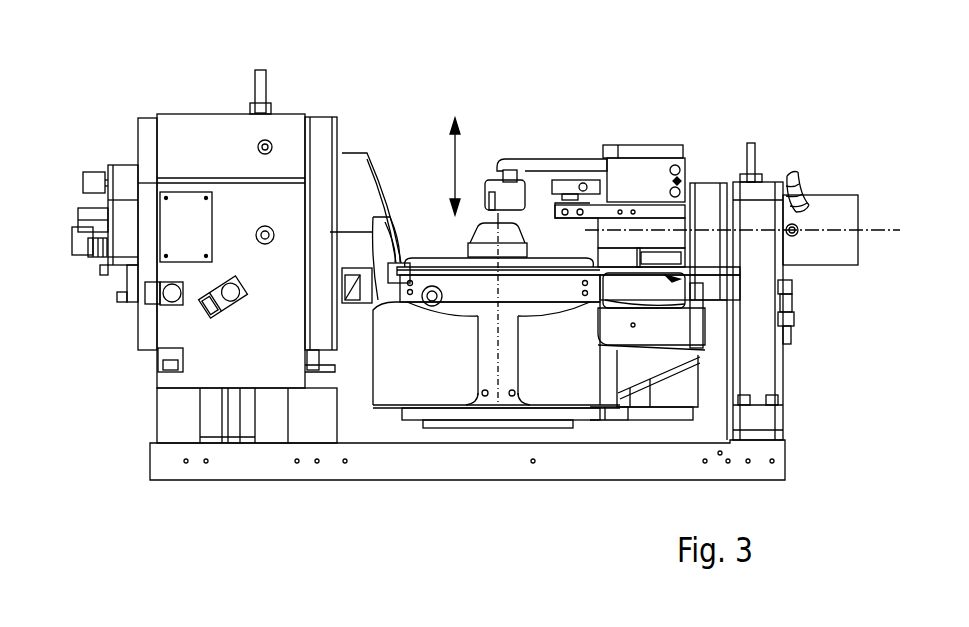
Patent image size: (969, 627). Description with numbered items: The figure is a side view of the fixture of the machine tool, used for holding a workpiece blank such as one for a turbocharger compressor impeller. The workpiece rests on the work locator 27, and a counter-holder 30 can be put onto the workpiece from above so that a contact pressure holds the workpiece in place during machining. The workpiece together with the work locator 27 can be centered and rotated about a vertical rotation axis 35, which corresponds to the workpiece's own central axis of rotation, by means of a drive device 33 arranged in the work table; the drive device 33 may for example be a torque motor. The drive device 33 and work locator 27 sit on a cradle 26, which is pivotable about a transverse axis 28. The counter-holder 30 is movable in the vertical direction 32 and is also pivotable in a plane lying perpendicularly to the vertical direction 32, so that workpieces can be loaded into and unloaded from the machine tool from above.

The cradle 26 is at (673, 328).
The work locator 27 is at (517, 230).
The transverse axis 28 is at (838, 230).
The counter-holder 30 is at (486, 172).
The vertical direction 32 is at (447, 172).
The drive device 33 is at (508, 275).
The vertical rotation axis 35 is at (498, 430).